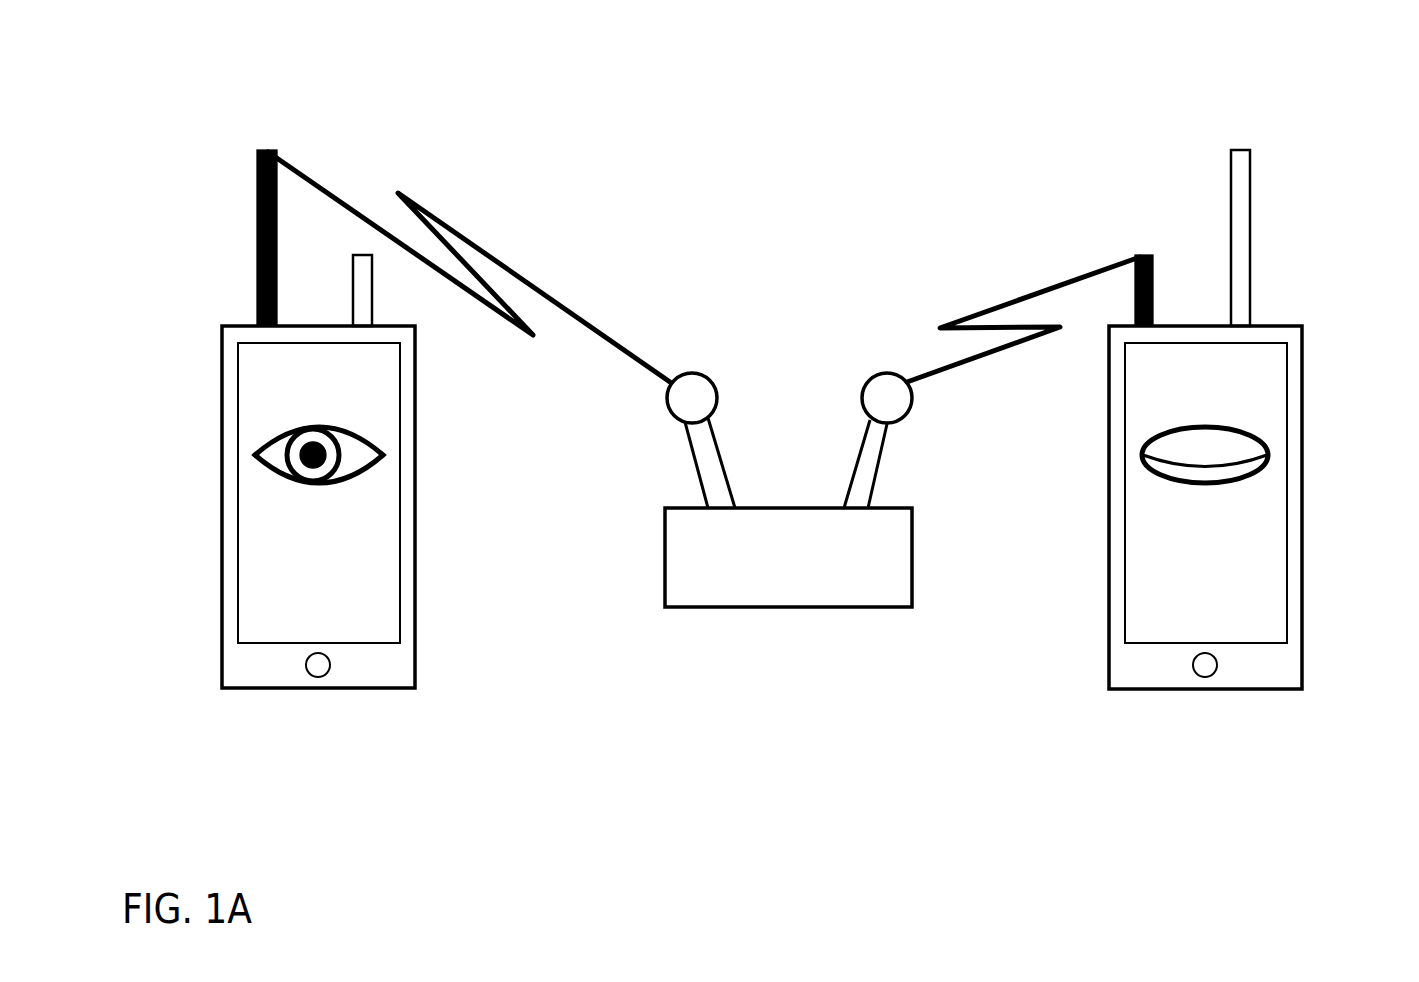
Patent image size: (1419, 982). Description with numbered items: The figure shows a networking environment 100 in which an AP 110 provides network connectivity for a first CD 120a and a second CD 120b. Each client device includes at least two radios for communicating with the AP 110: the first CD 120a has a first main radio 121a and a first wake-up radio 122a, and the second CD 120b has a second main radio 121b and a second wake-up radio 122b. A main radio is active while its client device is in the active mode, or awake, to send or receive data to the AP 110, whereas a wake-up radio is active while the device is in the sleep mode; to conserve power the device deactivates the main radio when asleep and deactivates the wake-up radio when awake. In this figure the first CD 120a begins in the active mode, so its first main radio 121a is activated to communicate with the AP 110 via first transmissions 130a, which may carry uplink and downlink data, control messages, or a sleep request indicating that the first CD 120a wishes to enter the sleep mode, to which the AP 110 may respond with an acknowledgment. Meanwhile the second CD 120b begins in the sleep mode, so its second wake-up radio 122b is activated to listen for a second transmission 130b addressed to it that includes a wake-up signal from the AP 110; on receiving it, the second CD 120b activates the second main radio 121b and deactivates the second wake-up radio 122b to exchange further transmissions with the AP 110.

The networking environment 100 is at (1330, 76).
The AP 110 is at (787, 608).
The first CD 120a is at (372, 690).
The second CD 120b is at (1240, 690).
The first main radio 121a is at (258, 237).
The second main radio 121b is at (1250, 212).
The first wake-up radio 122a is at (353, 283).
The second wake-up radio 122b is at (1215, 247).
The first transmissions 130a is at (493, 255).
The second transmission 130b is at (1017, 298).